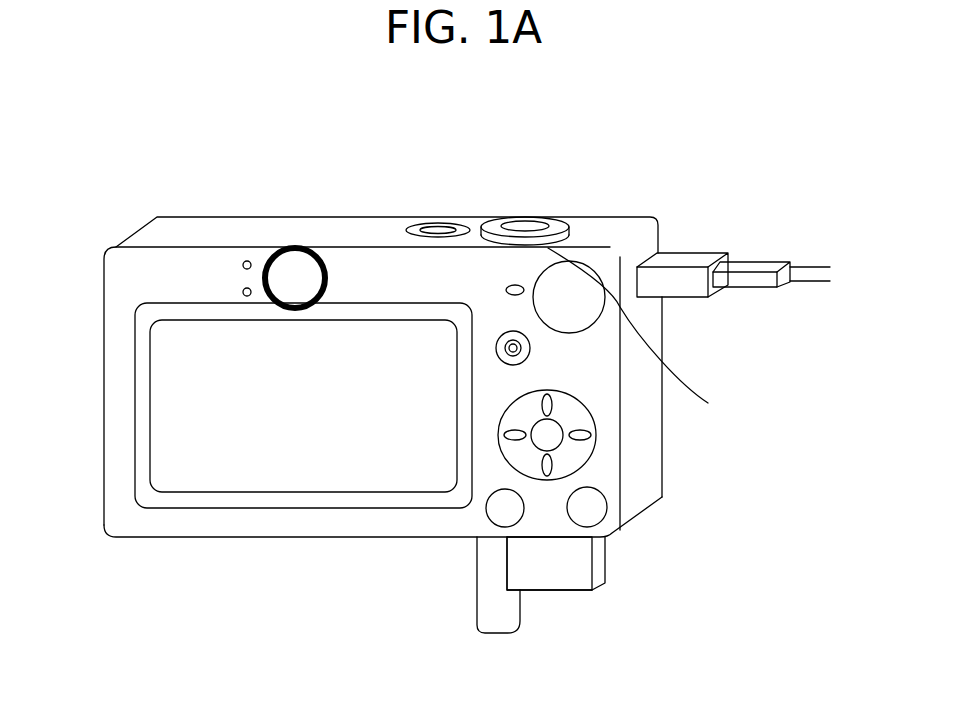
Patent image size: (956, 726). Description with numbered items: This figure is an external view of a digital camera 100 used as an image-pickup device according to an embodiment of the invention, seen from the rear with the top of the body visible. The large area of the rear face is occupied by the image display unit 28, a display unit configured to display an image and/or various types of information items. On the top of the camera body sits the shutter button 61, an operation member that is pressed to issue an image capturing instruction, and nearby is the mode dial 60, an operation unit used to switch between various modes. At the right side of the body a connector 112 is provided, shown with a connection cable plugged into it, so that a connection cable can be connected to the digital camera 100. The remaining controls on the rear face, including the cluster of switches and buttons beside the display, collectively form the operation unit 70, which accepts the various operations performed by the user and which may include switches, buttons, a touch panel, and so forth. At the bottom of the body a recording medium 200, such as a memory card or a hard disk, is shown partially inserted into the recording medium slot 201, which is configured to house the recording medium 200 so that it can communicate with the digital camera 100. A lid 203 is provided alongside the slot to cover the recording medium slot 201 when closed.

The digital camera 100 is at (214, 540).
The image display unit 28 is at (203, 303).
The shutter button 61 is at (547, 218).
The mode dial 60 is at (620, 257).
The connector 112 is at (658, 235).
The operation unit 70 is at (473, 233).
The recording medium 200 is at (565, 577).
The recording medium slot 201 is at (507, 542).
The lid 203 is at (477, 620).